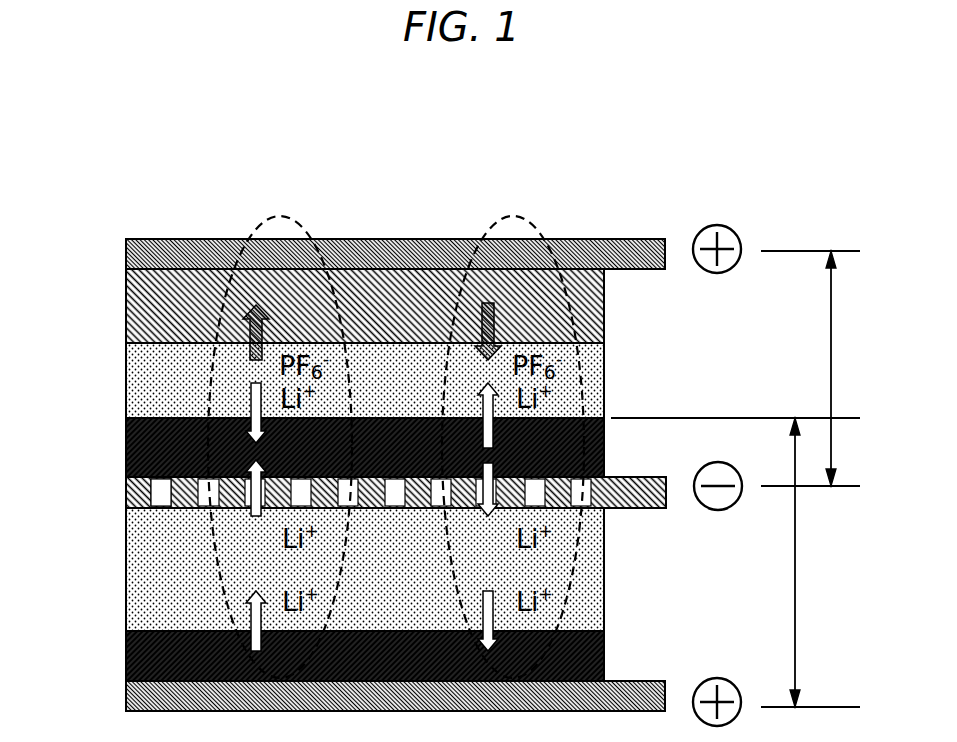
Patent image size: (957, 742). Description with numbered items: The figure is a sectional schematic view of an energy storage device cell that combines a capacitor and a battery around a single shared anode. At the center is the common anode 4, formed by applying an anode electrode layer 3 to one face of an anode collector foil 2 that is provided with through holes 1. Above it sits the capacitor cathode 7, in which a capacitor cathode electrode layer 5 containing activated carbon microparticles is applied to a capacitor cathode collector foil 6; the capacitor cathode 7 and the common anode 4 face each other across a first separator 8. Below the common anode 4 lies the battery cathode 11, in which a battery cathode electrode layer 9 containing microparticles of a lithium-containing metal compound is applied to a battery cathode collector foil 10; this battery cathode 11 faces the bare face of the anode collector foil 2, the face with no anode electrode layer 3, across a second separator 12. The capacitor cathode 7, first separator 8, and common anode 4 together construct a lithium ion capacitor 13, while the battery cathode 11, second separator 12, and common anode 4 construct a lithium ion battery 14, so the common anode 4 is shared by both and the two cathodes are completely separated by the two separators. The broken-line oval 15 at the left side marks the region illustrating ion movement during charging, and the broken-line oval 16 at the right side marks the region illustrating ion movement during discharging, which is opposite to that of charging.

The through holes 1 is at (155, 488).
The anode collector foil 2 is at (368, 493).
The anode electrode layer 3 is at (118, 448).
The common anode 4 is at (352, 464).
The capacitor cathode electrode layer 5 is at (337, 306).
The capacitor cathode collector foil 6 is at (118, 244).
The capacitor cathode 7 is at (352, 291).
The first separator 8 is at (118, 373).
The battery cathode electrode layer 9 is at (118, 650).
The battery cathode collector foil 10 is at (118, 690).
The battery cathode 11 is at (342, 674).
The second separator 12 is at (118, 597).
The lithium ion capacitor 13 is at (824, 340).
The lithium ion battery 14 is at (788, 601).
The broken-line oval 15 is at (273, 206).
The broken-line oval 16 is at (506, 206).